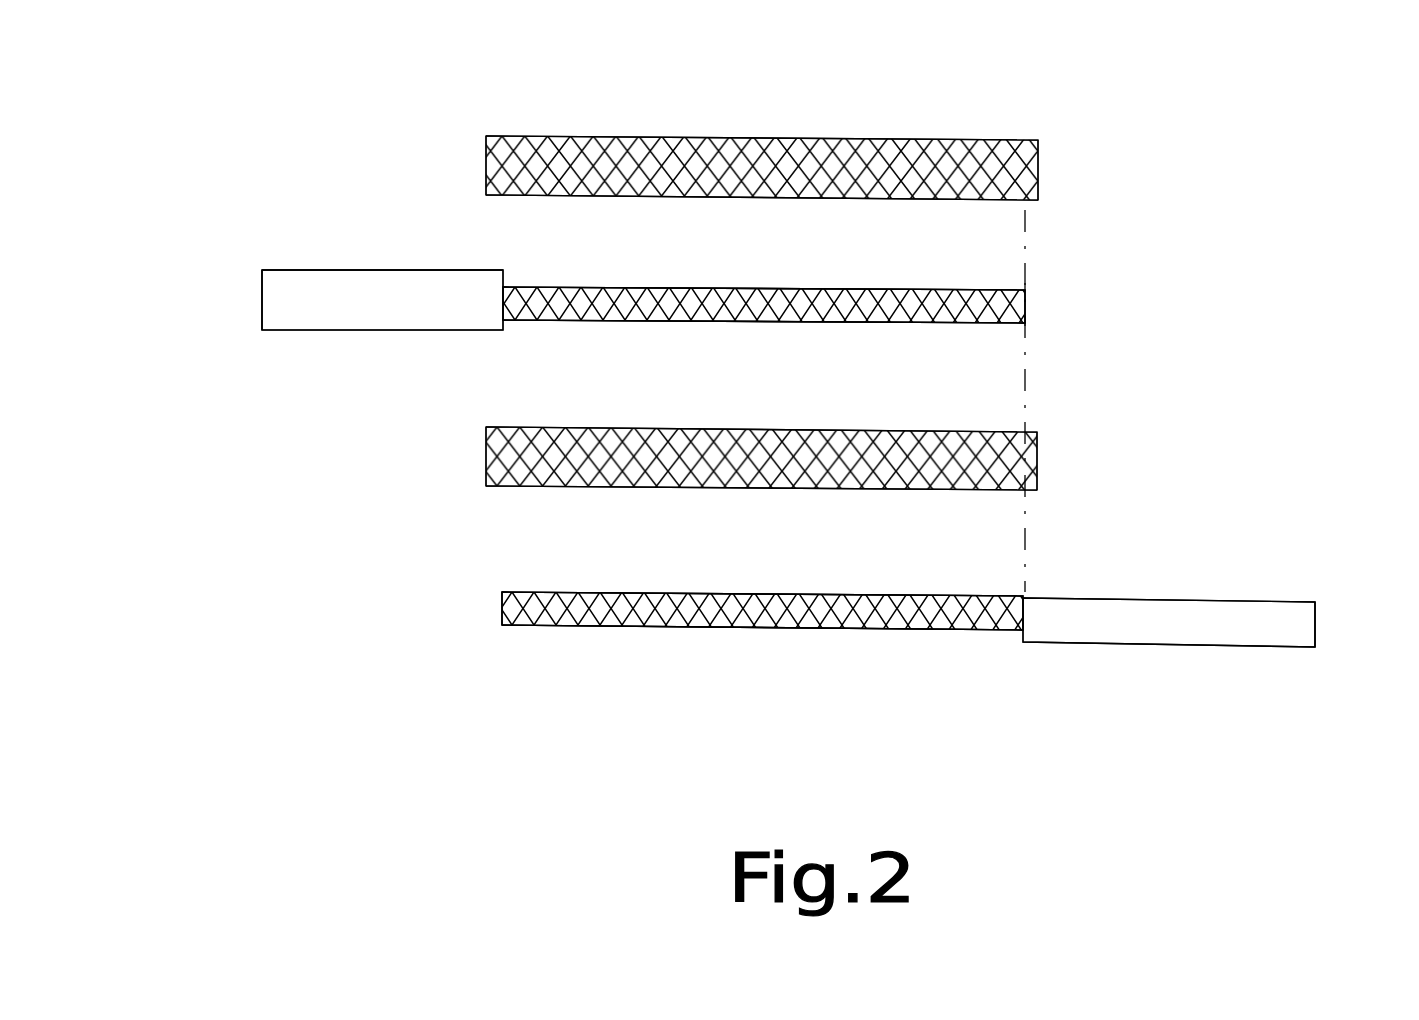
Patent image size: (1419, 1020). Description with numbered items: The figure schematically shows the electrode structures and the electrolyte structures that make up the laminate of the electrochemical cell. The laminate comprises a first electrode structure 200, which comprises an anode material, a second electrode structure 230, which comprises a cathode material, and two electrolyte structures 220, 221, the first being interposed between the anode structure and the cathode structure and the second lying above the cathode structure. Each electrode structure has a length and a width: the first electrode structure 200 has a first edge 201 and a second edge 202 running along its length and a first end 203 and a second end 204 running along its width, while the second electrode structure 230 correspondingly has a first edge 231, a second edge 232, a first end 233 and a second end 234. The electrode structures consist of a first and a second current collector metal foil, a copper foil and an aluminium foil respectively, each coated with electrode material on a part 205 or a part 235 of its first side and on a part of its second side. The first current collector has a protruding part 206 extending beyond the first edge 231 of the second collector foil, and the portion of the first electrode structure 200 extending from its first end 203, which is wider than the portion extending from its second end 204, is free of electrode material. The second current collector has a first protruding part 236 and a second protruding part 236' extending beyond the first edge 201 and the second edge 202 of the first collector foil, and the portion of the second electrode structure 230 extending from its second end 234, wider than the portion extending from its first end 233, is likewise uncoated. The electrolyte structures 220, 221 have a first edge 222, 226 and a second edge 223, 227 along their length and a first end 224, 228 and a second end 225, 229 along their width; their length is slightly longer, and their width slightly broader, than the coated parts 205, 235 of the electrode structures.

The first electrode structure 200 is at (641, 646).
The first edge of first electrode structure 201 is at (784, 630).
The second edge of first electrode structure 202 is at (668, 593).
The first end of first electrode structure 203 is at (1317, 620).
The second end of first electrode structure 204 is at (500, 603).
The coated part of first electrode structure 205 is at (883, 627).
The protruding part of first current collector 206 is at (1057, 637).
The first electrolyte structure 220 is at (748, 402).
The second electrolyte structure 221 is at (763, 118).
The first edge of first electrolyte structure 222 is at (815, 490).
The second edge of first electrolyte structure 223 is at (908, 428).
The first end of first electrolyte structure 224 is at (1039, 463).
The second end of first electrolyte structure 225 is at (484, 458).
The first edge of second electrolyte structure 226 is at (637, 199).
The second edge of second electrolyte structure 227 is at (617, 132).
The first end of second electrolyte structure 228 is at (1041, 172).
The second end of second electrolyte structure 229 is at (484, 168).
The second electrode structure 230 is at (504, 342).
The first edge of second electrode structure 231 is at (567, 324).
The second edge of second electrode structure 232 is at (570, 285).
The first end of second electrode structure 233 is at (1028, 305).
The second end of second electrode structure 234 is at (259, 300).
The coated part of second electrode structure 235 is at (744, 302).
The first protruding part of second current collector 236 is at (382, 342).
The second protruding part of second current collector 236' is at (382, 239).